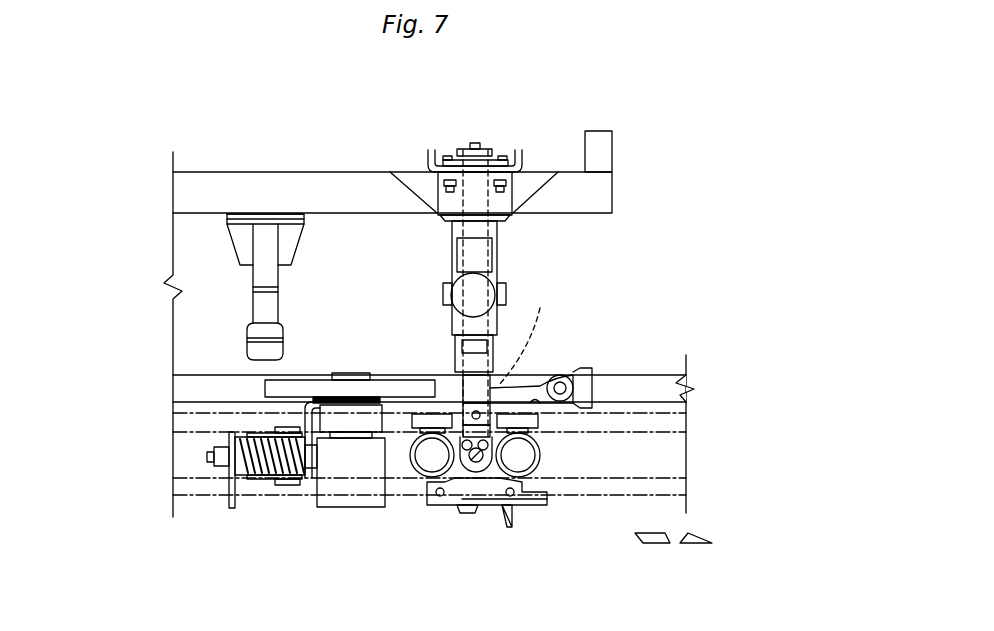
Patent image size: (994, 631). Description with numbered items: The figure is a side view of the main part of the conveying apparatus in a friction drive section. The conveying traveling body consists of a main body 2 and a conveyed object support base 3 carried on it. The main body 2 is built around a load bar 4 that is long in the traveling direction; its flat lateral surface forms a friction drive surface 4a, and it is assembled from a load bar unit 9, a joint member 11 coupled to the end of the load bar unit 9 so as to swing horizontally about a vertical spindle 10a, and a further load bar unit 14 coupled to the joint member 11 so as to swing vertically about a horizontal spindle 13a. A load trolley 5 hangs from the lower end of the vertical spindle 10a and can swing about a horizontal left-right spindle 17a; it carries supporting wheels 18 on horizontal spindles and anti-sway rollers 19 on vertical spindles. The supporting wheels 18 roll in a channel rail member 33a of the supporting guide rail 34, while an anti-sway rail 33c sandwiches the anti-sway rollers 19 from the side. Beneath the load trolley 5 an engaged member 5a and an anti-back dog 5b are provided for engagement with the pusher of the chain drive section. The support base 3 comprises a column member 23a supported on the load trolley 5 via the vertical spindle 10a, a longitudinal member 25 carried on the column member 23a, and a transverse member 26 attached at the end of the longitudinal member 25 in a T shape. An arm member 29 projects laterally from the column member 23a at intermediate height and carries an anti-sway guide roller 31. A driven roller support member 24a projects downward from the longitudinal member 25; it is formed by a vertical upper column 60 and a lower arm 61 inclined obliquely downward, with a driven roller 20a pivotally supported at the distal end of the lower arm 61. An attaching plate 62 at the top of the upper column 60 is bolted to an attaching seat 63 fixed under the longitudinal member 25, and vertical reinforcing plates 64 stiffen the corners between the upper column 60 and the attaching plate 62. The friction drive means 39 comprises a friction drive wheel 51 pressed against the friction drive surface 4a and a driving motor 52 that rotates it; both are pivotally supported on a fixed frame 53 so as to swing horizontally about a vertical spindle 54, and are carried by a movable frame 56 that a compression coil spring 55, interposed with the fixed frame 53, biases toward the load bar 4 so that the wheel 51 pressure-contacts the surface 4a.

The main body 2 is at (190, 362).
The conveyed object support base 3 is at (372, 172).
The load bar 4 is at (652, 372).
The friction drive surface 4a is at (190, 388).
The load trolley 5 is at (542, 508).
The engaged member 5a is at (508, 514).
The anti-back dog 5b is at (478, 512).
The load bar unit 9 is at (173, 352).
The vertical spindle 10a is at (533, 347).
The joint member 11 is at (528, 382).
The horizontal spindle 13a is at (567, 388).
The load bar unit 14 is at (694, 389).
The horizontal left-right spindle 17a is at (468, 463).
The supporting wheels 18 is at (425, 462).
The anti-sway rollers 19 is at (437, 420).
The driven roller 20a is at (255, 348).
The column member 23a is at (497, 258).
The driven roller support member 24a is at (250, 245).
The longitudinal member 25 is at (200, 192).
The transverse member 26 is at (604, 147).
The arm member 29 is at (443, 295).
The anti-sway guide roller 31 is at (490, 295).
The channel rail member 33a is at (180, 458).
The anti-sway rail 33c is at (178, 424).
The supporting guide rail 34 is at (686, 458).
The friction drive means 39 is at (338, 372).
The friction drive wheel 51 is at (378, 388).
The driving motor 52 is at (340, 500).
The fixed frame 53 is at (222, 487).
The vertical spindle 54 is at (260, 483).
The compression coil spring 55 is at (278, 468).
The movable frame 56 is at (308, 421).
The upper column 60 is at (265, 240).
The lower arm 61 is at (258, 302).
The attaching plate 62 is at (293, 213).
The attaching seat 63 is at (235, 213).
The vertical reinforcing plates 64 is at (243, 263).